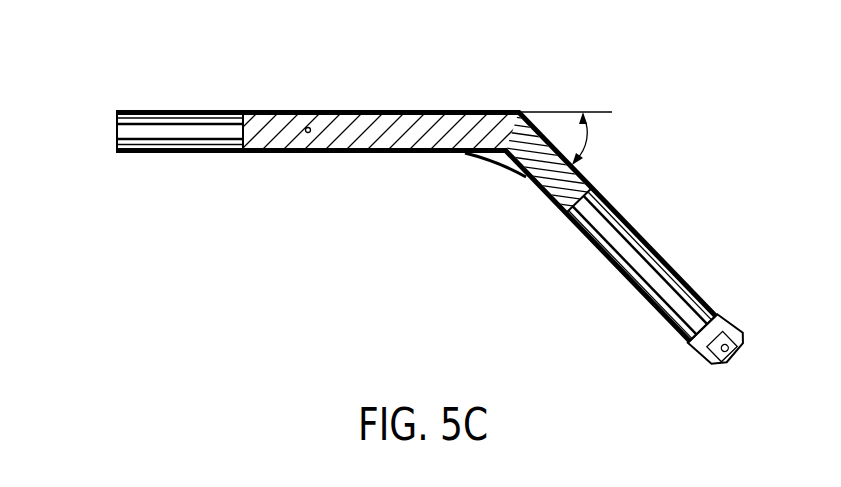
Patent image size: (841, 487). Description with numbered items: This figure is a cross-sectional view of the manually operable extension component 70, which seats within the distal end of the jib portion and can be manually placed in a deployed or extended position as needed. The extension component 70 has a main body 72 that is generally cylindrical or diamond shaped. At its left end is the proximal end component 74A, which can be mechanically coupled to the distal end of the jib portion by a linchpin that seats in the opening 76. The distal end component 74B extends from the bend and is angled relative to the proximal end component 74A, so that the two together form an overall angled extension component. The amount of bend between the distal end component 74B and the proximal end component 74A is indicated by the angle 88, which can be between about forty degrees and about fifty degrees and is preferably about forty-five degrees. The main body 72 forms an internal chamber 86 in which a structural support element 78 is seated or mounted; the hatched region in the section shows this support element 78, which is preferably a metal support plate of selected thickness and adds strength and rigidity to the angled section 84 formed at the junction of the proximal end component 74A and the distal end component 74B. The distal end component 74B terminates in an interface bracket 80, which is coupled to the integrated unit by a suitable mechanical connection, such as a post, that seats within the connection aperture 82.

The extension component 70 is at (521, 272).
The main body 72 is at (181, 110).
The proximal end component 74A is at (118, 111).
The distal end component 74B is at (677, 271).
The opening 76 is at (309, 133).
The structural support element 78 is at (421, 114).
The interface bracket 80 is at (744, 333).
The connection aperture 82 is at (708, 349).
The angled section 84 is at (496, 180).
The internal chamber 86 is at (134, 131).
The angle 88 is at (586, 140).